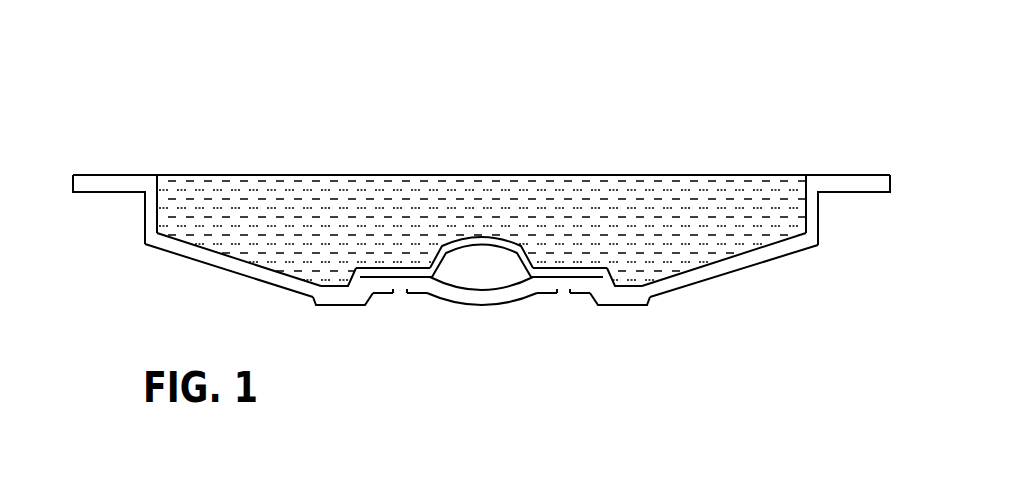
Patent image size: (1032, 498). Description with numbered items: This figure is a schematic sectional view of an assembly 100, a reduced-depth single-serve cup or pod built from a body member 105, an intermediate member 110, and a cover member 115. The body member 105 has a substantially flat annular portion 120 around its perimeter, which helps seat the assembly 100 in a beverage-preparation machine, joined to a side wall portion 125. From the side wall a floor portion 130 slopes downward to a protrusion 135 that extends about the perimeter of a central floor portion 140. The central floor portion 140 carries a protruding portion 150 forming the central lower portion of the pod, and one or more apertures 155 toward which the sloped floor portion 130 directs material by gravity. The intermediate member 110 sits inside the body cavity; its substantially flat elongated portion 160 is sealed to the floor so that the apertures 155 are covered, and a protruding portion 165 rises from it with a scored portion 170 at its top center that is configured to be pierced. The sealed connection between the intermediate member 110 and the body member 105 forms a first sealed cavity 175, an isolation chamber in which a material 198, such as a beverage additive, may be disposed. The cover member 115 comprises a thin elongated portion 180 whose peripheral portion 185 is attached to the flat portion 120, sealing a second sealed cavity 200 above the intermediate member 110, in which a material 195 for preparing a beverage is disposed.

The assembly 100 is at (176, 90).
The body member 105 is at (158, 267).
The intermediate member 110 is at (465, 260).
The cover member 115 is at (354, 163).
The substantially flat portion 120 is at (89, 193).
The side wall portion 125 is at (818, 220).
The floor portion 130 is at (215, 261).
The protrusion 135 is at (625, 306).
The central floor portion 140 is at (482, 322).
The protruding portion 150 is at (505, 297).
The apertures 155 is at (398, 286).
The elongated portion 160 is at (398, 267).
The protruding portion 165 is at (505, 238).
The scored portion 170 is at (462, 237).
The cavity 175 is at (470, 271).
The portion 180 is at (268, 173).
The peripheral portion 185 is at (98, 173).
The material 195 is at (668, 192).
The material 198 is at (515, 273).
The cavity 200 is at (755, 193).